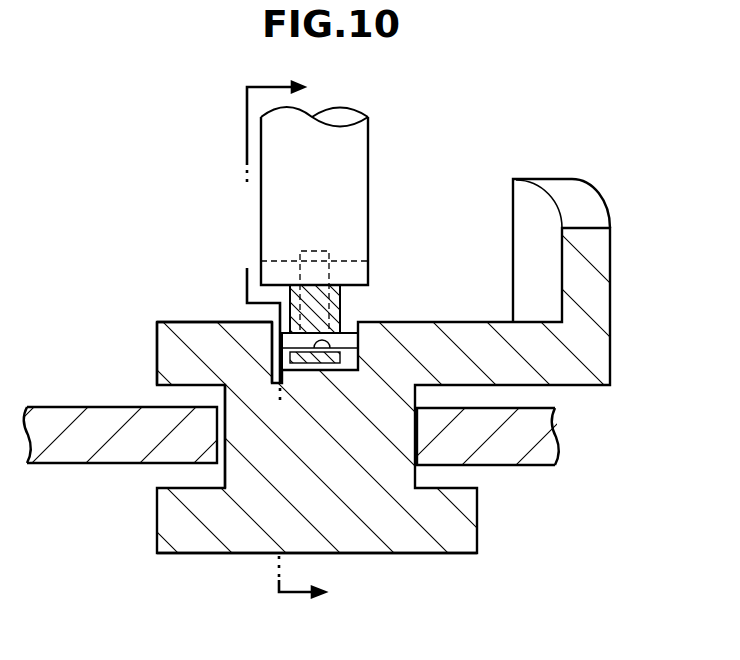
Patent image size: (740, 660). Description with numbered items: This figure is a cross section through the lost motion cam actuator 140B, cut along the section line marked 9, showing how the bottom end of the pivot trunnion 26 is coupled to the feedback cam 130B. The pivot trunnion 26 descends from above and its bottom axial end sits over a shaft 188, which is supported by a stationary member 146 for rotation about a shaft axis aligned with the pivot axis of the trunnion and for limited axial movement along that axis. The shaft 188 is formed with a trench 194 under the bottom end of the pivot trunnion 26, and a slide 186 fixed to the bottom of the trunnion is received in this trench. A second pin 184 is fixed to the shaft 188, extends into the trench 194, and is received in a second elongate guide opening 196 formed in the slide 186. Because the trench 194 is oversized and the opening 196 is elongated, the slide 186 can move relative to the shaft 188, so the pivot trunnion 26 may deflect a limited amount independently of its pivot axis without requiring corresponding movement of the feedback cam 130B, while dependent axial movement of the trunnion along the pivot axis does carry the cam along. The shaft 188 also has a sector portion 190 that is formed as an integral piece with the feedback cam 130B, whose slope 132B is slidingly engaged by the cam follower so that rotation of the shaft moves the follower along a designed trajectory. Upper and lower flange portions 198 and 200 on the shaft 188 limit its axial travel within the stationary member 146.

The section line 9- 9 is at (266, 86).
The pivot trunnion 26 is at (360, 157).
The feedback cam 130B is at (512, 197).
The slope 132B is at (613, 187).
The lost motion cam actuator 140B is at (146, 270).
The stationary member 146 is at (103, 412).
The second pin 184 is at (347, 340).
The slide 186 is at (343, 305).
The shaft 188 is at (248, 467).
The sector portion 190 is at (167, 321).
The trench 194 is at (275, 323).
The second elongate guide opening 196 is at (327, 352).
The upper flange portion 198 is at (157, 336).
The lower flange portion 200 is at (205, 542).